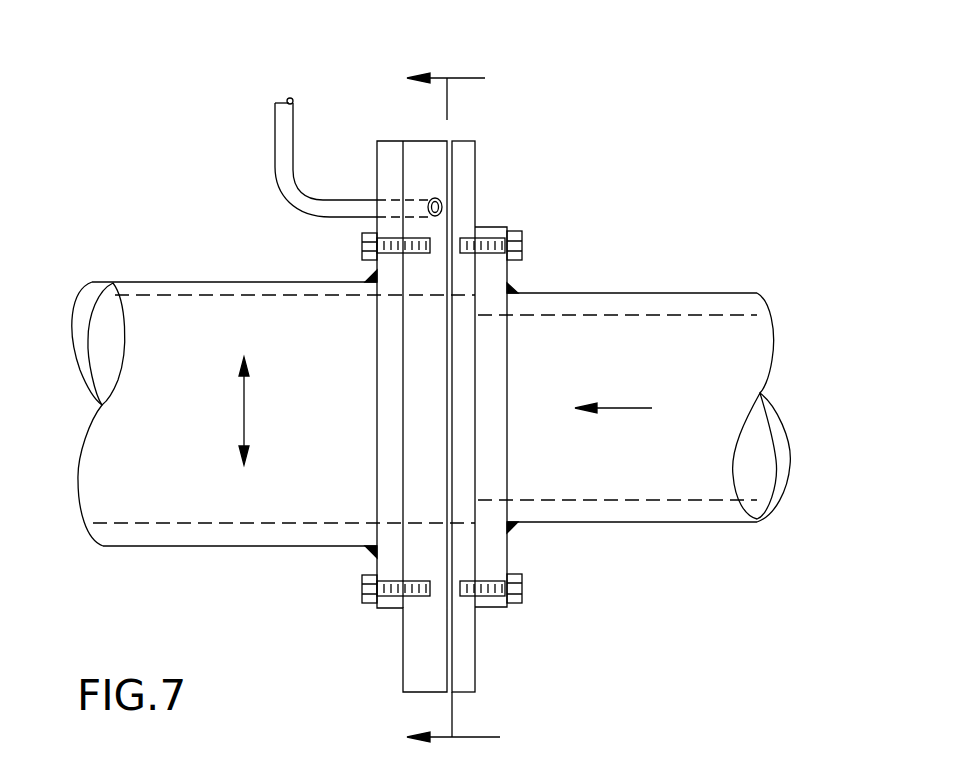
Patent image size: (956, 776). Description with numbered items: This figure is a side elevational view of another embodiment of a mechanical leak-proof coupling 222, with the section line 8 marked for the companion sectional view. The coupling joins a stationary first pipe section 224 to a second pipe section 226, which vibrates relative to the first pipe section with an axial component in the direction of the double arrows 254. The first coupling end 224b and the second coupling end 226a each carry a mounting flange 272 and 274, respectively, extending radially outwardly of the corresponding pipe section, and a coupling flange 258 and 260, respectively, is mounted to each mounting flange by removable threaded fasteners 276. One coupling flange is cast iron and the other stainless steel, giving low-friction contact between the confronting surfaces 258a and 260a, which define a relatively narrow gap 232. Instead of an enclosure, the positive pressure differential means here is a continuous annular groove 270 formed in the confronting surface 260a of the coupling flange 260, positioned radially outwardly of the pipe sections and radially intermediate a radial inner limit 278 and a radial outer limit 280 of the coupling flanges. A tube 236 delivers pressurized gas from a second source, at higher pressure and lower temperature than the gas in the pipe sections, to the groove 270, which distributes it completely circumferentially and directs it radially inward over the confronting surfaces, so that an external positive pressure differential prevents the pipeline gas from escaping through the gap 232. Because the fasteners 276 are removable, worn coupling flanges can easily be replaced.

The section line 8- 8 is at (467, 408).
The mechanical coupling 222 is at (537, 120).
The first pipe section 224 is at (667, 512).
The first coupling end 224b is at (500, 305).
The second pipe section 226 is at (170, 546).
The second coupling end 226a is at (378, 531).
The gap 232 is at (450, 693).
The tube 236 is at (282, 127).
The double arrows 254 is at (244, 397).
The coupling flange 258 is at (476, 165).
The confronting surface 258a is at (447, 378).
The coupling flange 260 is at (408, 157).
The confronting surface 260a is at (447, 425).
The continuous annular groove 270 is at (442, 207).
The mounting flange 272 is at (476, 273).
The mounting flange 274 is at (388, 348).
The threaded fasteners 276 is at (361, 248).
The radial inner limit 278 is at (435, 306).
The radial outer limit 280 is at (422, 140).